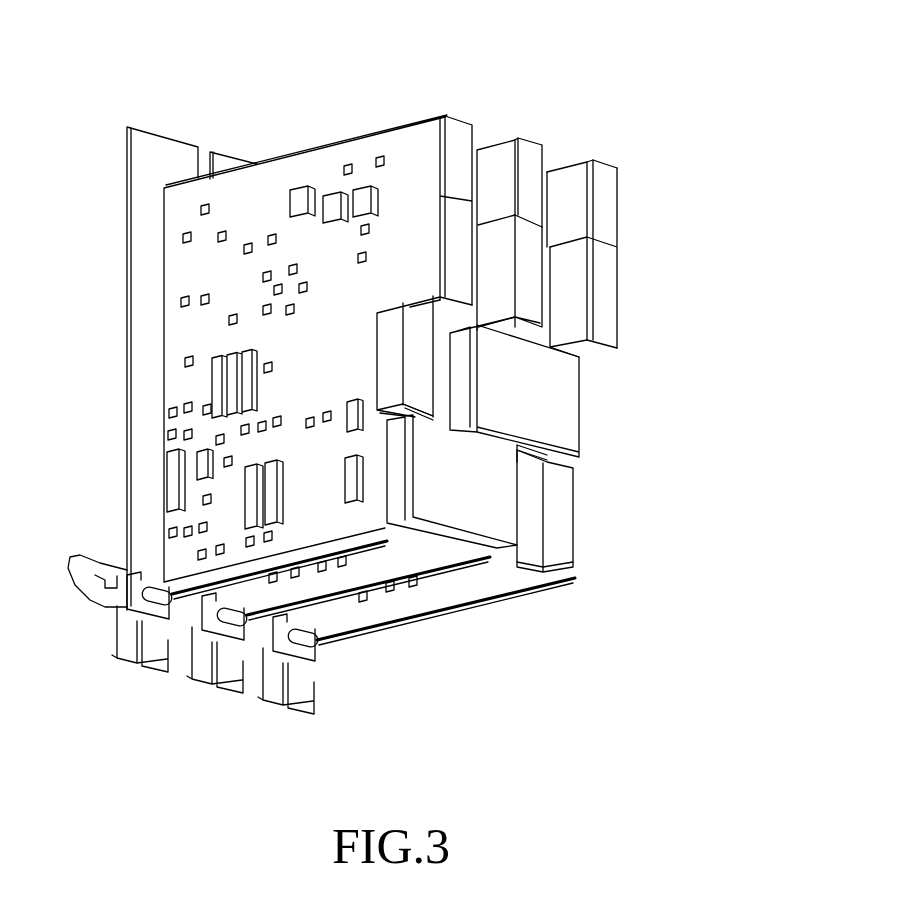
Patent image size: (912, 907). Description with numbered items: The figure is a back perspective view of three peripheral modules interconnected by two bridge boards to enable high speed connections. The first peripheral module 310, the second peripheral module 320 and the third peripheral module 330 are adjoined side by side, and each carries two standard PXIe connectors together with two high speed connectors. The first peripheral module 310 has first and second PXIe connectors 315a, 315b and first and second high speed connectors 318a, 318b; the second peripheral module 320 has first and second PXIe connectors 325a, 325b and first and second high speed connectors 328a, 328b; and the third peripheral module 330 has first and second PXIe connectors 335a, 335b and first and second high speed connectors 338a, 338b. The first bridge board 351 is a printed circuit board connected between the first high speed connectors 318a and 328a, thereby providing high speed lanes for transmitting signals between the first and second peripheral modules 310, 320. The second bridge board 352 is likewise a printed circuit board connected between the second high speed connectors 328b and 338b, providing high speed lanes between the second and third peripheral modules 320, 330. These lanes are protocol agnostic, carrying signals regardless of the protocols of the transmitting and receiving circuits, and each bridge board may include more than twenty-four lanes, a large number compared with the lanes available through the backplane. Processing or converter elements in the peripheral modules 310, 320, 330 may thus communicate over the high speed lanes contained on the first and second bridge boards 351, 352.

The first peripheral module 310 is at (303, 147).
The first PXIe connector 315a is at (458, 133).
The second PXIe connector 315b is at (460, 243).
The first high speed connector 318a is at (420, 362).
The second high speed connector 318b is at (402, 487).
The second peripheral module 320 is at (488, 143).
The first PXIe connector 325a is at (533, 153).
The second PXIe connector 325b is at (587, 340).
The first high speed connector 328a is at (467, 388).
The second high speed connector 328b is at (480, 553).
The third peripheral module 330 is at (568, 165).
The first PXIe connector 335a is at (610, 195).
The second PXIe connector 335b is at (612, 293).
The first high speed connector 338a is at (547, 458).
The second high speed connector 338b is at (535, 553).
The first bridge board 351 is at (477, 482).
The second bridge board 352 is at (532, 388).